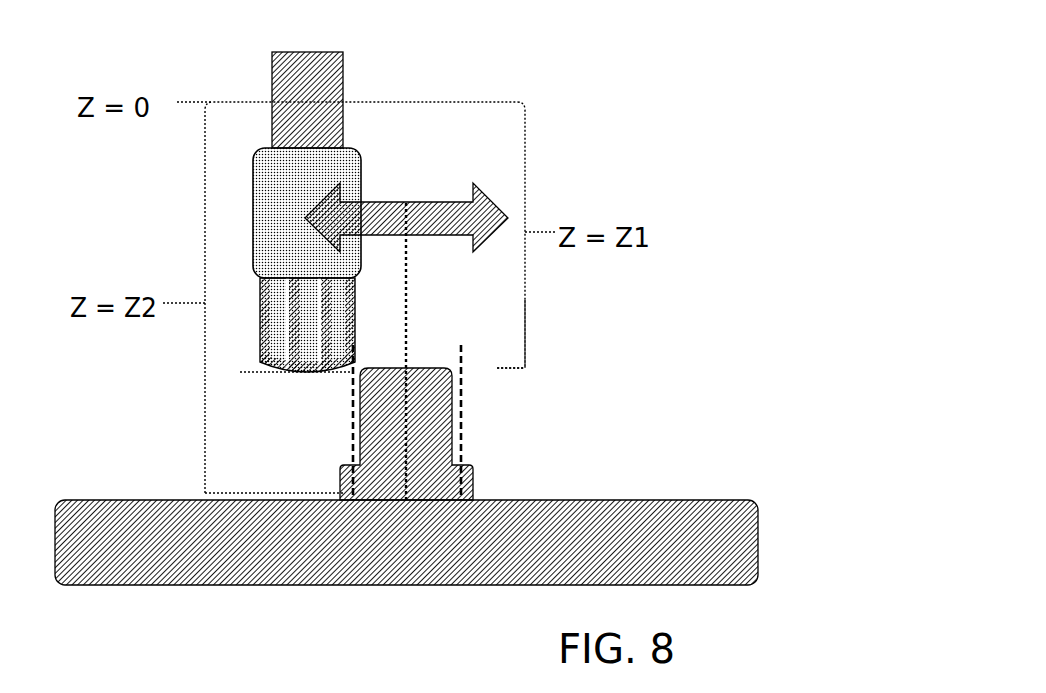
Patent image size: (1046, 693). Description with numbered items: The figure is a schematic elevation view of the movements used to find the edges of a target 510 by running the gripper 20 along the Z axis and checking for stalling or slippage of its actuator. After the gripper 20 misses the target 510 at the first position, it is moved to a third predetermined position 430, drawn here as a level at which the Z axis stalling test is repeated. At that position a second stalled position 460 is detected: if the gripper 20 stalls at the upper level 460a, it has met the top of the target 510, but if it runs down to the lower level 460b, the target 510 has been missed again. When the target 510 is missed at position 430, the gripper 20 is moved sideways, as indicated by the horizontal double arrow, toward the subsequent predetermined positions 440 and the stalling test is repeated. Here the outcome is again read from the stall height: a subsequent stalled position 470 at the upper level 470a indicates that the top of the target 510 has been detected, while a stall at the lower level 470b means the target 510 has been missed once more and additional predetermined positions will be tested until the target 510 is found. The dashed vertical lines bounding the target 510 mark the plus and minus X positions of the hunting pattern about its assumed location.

The gripper 20 is at (263, 328).
The third predetermined position 430 is at (307, 375).
The subsequent predetermined positions 440 is at (477, 372).
The second stalled position 460 is at (196, 423).
The second stalled position at top of target 460a is at (250, 373).
The second stalled position missing target 460b is at (260, 493).
The subsequent stalled positions 470 is at (406, 464).
The subsequent stalled position at top of target 470a is at (497, 375).
The subsequent stalled position missing target 470b is at (515, 494).
The target 510 is at (438, 392).